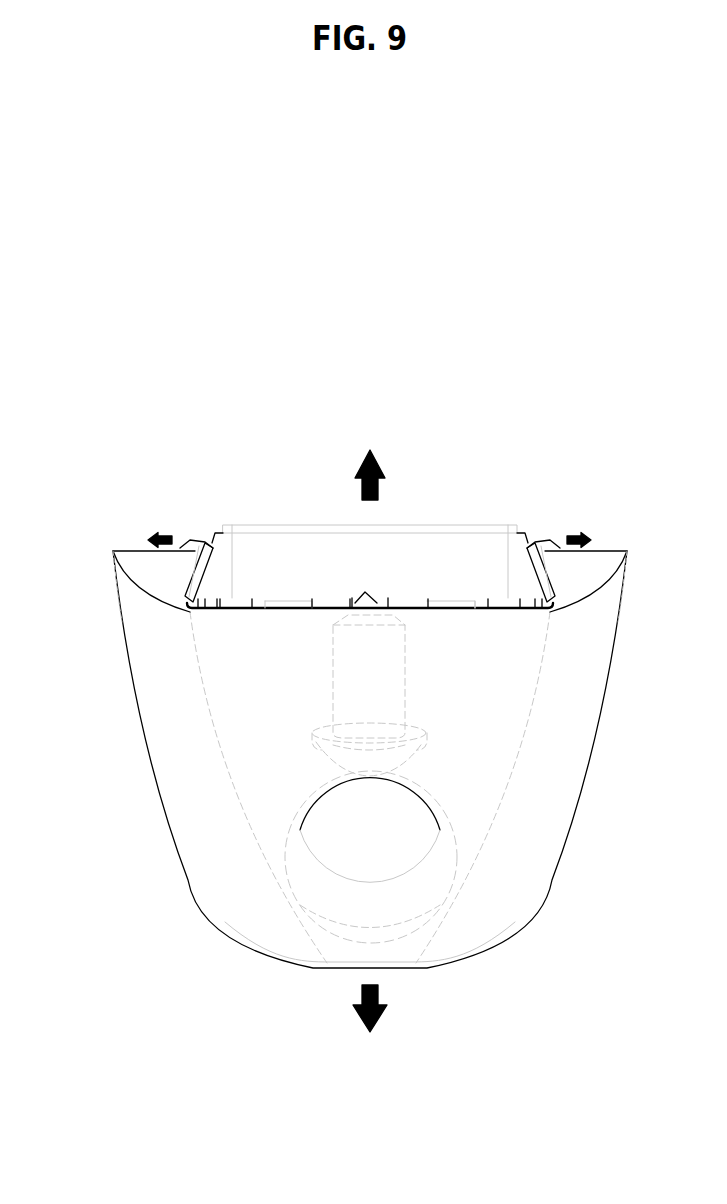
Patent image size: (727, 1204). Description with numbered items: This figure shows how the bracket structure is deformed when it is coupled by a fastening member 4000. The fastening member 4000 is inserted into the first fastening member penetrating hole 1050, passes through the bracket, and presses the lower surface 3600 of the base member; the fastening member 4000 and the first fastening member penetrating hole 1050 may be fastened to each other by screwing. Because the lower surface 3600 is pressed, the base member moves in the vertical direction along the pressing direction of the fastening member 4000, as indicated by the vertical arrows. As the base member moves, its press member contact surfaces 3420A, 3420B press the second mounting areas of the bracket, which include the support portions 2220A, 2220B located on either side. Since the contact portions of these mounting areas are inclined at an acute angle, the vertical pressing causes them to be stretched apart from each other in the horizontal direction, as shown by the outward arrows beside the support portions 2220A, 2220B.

The support portion 2220B is at (193, 543).
The support portion 2220A is at (540, 545).
The press member contact surface 3420B is at (207, 543).
The press member contact surface 3420A is at (532, 530).
The lower surface 3600 is at (500, 587).
The fastening member 4000 is at (355, 667).
The first fastening member penetrating hole 1050 is at (383, 885).